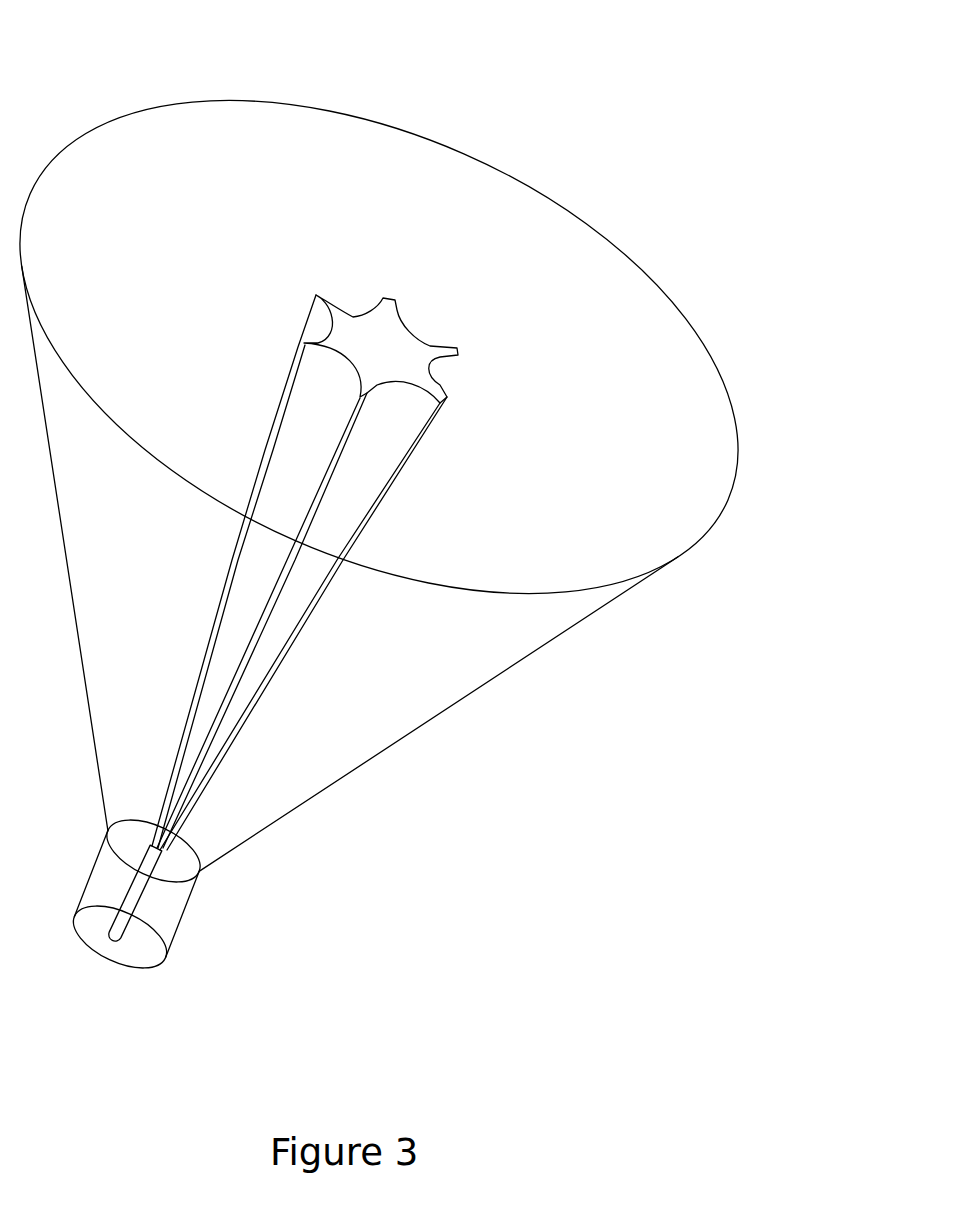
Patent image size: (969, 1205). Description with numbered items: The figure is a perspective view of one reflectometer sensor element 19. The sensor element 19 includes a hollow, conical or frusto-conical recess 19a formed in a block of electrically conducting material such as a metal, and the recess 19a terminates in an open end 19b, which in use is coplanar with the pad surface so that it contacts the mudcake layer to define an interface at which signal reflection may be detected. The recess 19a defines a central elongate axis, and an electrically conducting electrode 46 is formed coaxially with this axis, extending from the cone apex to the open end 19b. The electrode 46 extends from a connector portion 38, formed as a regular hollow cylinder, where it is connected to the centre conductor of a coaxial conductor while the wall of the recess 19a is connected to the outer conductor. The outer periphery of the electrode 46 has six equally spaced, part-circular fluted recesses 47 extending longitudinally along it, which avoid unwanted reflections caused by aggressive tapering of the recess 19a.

The reflectometer sensor element 19 is at (642, 143).
The conical or frusto-conical recess 19a is at (700, 398).
The open end 19b is at (642, 265).
The electrically conducting electrode 46 is at (387, 347).
The fluted recess 47 is at (315, 322).
The connector portion 38 is at (148, 950).